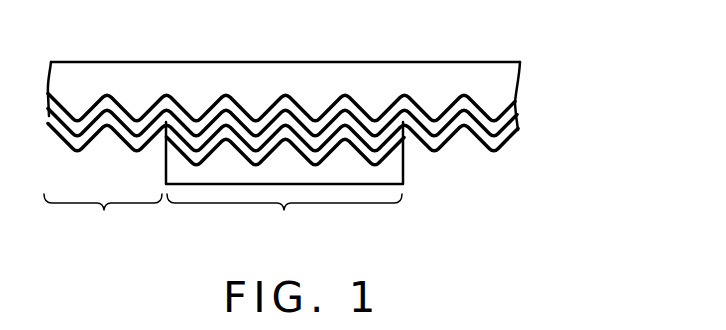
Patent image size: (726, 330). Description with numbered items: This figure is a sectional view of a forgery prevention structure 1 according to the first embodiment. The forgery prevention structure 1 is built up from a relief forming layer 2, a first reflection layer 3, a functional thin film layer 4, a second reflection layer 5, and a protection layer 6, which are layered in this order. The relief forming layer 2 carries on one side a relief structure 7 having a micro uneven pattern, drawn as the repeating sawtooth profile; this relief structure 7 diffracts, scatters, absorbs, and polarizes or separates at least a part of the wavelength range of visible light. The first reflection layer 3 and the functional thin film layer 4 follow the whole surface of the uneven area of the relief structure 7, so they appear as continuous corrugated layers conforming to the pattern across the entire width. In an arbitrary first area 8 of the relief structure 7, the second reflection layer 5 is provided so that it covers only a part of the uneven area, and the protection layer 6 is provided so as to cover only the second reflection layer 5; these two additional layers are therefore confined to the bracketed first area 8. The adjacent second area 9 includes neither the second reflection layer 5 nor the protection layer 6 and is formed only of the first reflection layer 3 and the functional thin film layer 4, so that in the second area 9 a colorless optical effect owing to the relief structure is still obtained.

The forgery prevention structure 1 is at (530, 69).
The relief forming layer 2 is at (505, 84).
The first reflection layer 3 is at (498, 130).
The functional thin film layer 4 is at (497, 128).
The second reflection layer 5 is at (380, 155).
The protection layer 6 is at (387, 177).
The relief structure 7 is at (64, 106).
The first area 8 is at (284, 216).
The second area 9 is at (103, 216).